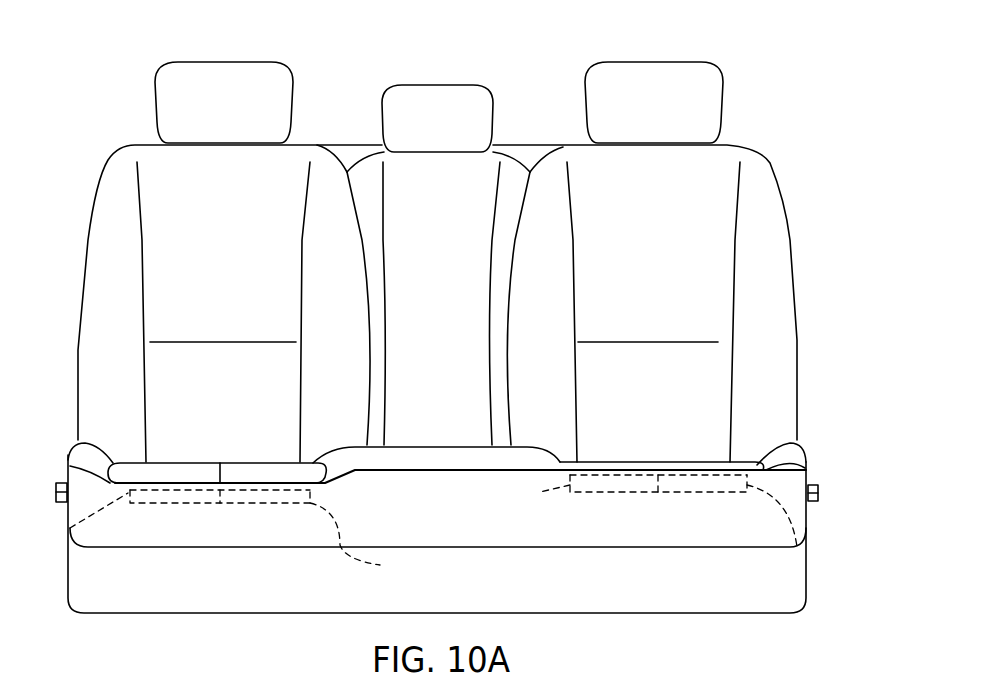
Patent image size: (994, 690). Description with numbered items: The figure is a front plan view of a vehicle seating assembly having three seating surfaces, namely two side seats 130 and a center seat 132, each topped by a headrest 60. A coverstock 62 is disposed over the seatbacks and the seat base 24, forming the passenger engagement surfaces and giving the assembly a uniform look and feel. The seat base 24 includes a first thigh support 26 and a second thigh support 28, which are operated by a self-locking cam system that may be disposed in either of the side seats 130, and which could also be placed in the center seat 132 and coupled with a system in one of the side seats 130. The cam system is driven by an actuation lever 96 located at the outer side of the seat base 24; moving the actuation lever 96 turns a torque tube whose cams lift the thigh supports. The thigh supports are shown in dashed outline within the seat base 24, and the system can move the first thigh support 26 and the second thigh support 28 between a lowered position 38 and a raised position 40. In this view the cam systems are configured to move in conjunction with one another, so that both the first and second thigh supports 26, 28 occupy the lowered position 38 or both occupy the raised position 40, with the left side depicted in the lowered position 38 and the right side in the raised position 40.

The seat base 24 is at (183, 467).
The first thigh support 26 is at (68, 530).
The second thigh support 28 is at (824, 548).
The lowered position 38 is at (175, 508).
The raised position 40 is at (622, 499).
The headrest 60 is at (253, 75).
The coverstock 62 is at (236, 237).
The actuation lever 96 is at (62, 480).
The side seats 130 is at (198, 372).
The center seat 132 is at (460, 271).